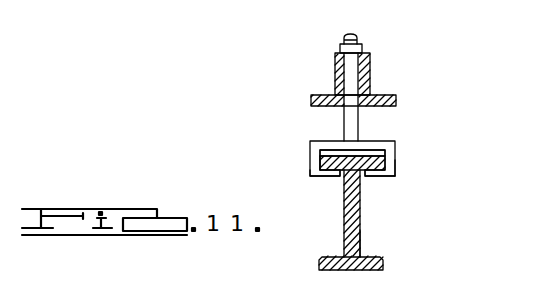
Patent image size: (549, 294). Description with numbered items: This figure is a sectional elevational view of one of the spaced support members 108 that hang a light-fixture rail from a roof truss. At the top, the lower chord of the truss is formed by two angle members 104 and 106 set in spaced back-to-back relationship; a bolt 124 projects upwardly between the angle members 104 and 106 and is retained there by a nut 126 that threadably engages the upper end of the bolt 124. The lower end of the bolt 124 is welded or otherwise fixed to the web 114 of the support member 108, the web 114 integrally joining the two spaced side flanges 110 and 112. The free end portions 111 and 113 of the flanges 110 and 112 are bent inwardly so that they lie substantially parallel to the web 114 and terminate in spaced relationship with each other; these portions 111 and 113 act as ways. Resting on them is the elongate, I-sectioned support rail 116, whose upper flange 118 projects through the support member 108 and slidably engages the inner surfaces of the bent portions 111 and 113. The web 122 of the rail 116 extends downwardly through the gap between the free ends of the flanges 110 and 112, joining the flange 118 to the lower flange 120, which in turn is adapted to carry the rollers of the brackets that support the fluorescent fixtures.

The angle member 104 is at (337, 69).
The angle member 106 is at (368, 80).
The support member 108 is at (395, 151).
The side flange 110 is at (311, 153).
The free end portion of flange 111 is at (330, 176).
The side flange 112 is at (395, 170).
The free end portion of flange 113 is at (368, 177).
The web 114 is at (385, 153).
The support rail 116 is at (360, 242).
The flange 118 is at (320, 161).
The flange 120 is at (380, 261).
The web 122 is at (354, 221).
The bolt 124 is at (353, 65).
The nut 126 is at (363, 46).